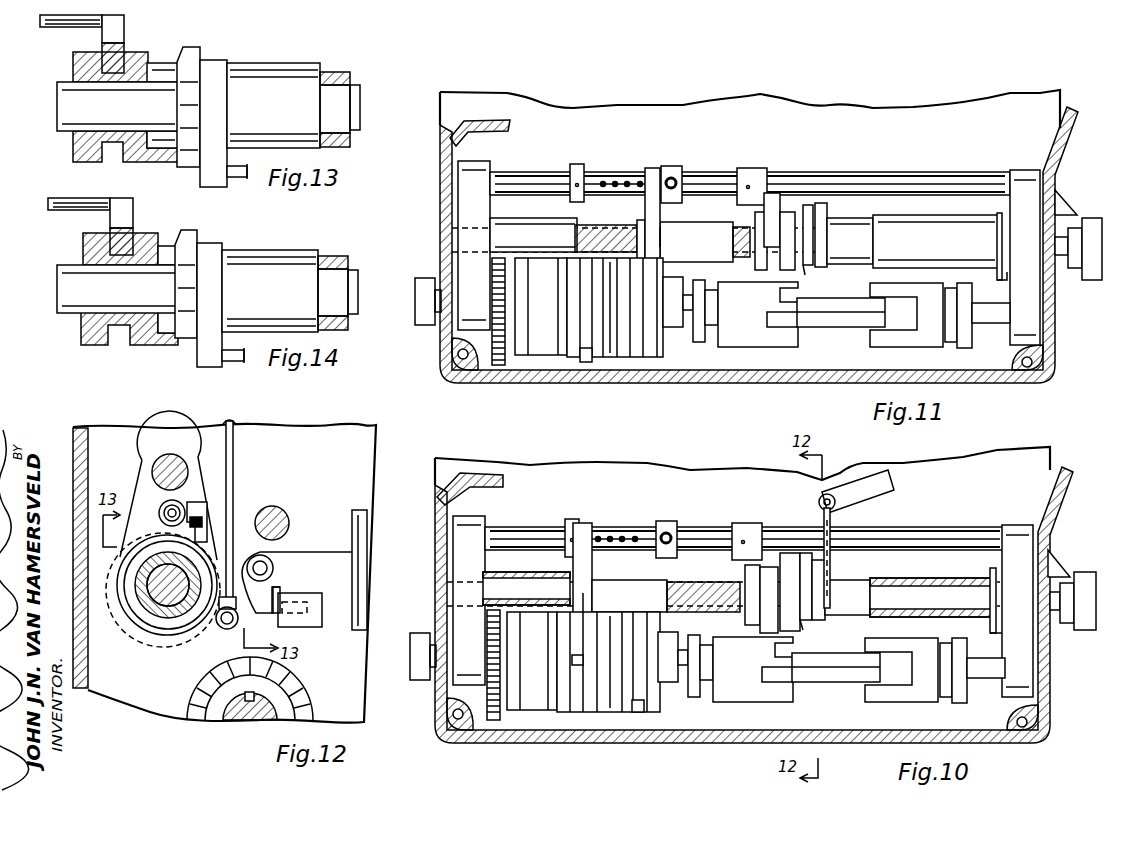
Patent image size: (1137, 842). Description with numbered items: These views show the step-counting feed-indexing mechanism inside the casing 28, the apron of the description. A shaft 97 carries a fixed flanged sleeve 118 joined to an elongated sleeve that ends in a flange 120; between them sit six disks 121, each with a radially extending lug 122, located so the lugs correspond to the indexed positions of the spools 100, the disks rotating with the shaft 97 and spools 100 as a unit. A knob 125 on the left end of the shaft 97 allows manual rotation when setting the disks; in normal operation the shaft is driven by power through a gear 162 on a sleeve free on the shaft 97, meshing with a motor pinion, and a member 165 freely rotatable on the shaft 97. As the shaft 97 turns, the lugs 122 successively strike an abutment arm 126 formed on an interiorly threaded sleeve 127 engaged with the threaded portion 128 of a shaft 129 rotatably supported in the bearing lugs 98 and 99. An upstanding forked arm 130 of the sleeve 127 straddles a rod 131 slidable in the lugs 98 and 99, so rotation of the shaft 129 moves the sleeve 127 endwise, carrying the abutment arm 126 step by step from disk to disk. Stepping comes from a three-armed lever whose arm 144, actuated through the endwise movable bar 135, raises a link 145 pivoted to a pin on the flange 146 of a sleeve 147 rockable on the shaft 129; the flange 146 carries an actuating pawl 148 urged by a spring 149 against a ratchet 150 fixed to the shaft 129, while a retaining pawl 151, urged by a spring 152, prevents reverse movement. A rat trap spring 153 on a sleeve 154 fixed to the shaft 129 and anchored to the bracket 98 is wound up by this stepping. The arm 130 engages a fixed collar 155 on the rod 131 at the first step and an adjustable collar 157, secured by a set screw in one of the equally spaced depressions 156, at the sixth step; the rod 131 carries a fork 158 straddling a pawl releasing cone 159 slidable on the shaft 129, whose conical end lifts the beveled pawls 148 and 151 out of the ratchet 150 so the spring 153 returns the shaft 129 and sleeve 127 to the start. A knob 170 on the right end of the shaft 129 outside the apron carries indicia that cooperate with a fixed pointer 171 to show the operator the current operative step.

In FIG. 11, the housing 28 is at (1045, 105).
In FIG. 10, the housing 28 is at (1040, 465).
In FIG. 12, the shaft 97 is at (240, 720).
In FIG. 11, the shaft 97 is at (825, 312).
In FIG. 10, the shaft 97 is at (835, 684).
In FIG. 11, the bearing lug 98 is at (1025, 312).
In FIG. 10, the bearing lug 98 is at (1020, 645).
In FIG. 11, the bearing lug 99 is at (470, 200).
In FIG. 10, the bearing lug 99 is at (445, 600).
In FIG. 12, the spools 100 is at (300, 695).
In FIG. 11, the spools 100 is at (755, 338).
In FIG. 10, the spools 100 is at (760, 690).
In FIG. 10, the flanged sleeve 118 is at (650, 695).
In FIG. 11, the flange 120 is at (573, 360).
In FIG. 10, the flange 120 is at (565, 713).
In FIG. 11, the disks 121 is at (623, 360).
In FIG. 10, the disks 121 is at (603, 713).
In FIG. 11, the lug 122 is at (585, 363).
In FIG. 10, the lug 122 is at (572, 660).
In FIG. 11, the knob 125 is at (420, 283).
In FIG. 10, the knob 125 is at (412, 641).
In FIG. 11, the abutment arm 126 is at (658, 285).
In FIG. 10, the abutment arm 126 is at (575, 640).
In FIG. 11, the interiorly threaded sleeve 127 is at (713, 241).
In FIG. 10, the interiorly threaded sleeve 127 is at (676, 595).
In FIG. 11, the threaded portion 128 is at (594, 224).
In FIG. 10, the threaded portion 128 is at (702, 582).
In FIG. 13, the shaft 129 is at (117, 106).
In FIG. 14, the shaft 129 is at (117, 289).
In FIG. 12, the shaft 129 is at (160, 605).
In FIG. 11, the shaft 129 is at (726, 235).
In FIG. 10, the shaft 129 is at (525, 582).
In FIG. 11, the upstanding arm 130 is at (652, 172).
In FIG. 10, the upstanding arm 130 is at (592, 567).
In FIG. 12, the rod 131 is at (175, 465).
In FIG. 11, the rod 131 is at (522, 175).
In FIG. 10, the rod 131 is at (745, 519).
In FIG. 12, the endwise movable bar 135 is at (287, 515).
In FIG. 10, the third arm 144 is at (878, 498).
In FIG. 12, the link 145 is at (234, 475).
In FIG. 10, the link 145 is at (832, 520).
In FIG. 13, the flange 146 is at (213, 85).
In FIG. 14, the flange 146 is at (208, 277).
In FIG. 12, the flange 146 is at (200, 615).
In FIG. 11, the flange 146 is at (823, 240).
In FIG. 10, the flange 146 is at (822, 580).
In FIG. 13, the sleeve 147 is at (293, 77).
In FIG. 14, the sleeve 147 is at (285, 260).
In FIG. 11, the sleeve 147 is at (862, 238).
In FIG. 10, the sleeve 147 is at (850, 585).
In FIG. 13, the actuating pawl 148 is at (195, 55).
In FIG. 14, the actuating pawl 148 is at (192, 238).
In FIG. 12, the actuating pawl 148 is at (158, 505).
In FIG. 11, the actuating pawl 148 is at (808, 235).
In FIG. 10, the actuating pawl 148 is at (805, 560).
In FIG. 12, the spring 149 is at (207, 518).
In FIG. 12, the ratchet 150 is at (142, 608).
In FIG. 11, the ratchet 150 is at (806, 268).
In FIG. 10, the ratchet 150 is at (803, 625).
In FIG. 13, the retaining pawl 151 is at (185, 160).
In FIG. 14, the retaining pawl 151 is at (180, 360).
In FIG. 12, the retaining pawl 151 is at (238, 620).
In FIG. 12, the spring 152 is at (280, 595).
In FIG. 11, the rat trap spring 153 is at (996, 240).
In FIG. 10, the rat trap spring 153 is at (990, 590).
In FIG. 11, the sleeve 154 is at (922, 235).
In FIG. 10, the sleeve 154 is at (910, 580).
In FIG. 11, the fixed collar 155 is at (578, 163).
In FIG. 10, the fixed collar 155 is at (581, 519).
In FIG. 11, the depressions 156 is at (615, 180).
In FIG. 10, the depressions 156 is at (616, 517).
In FIG. 11, the adjustable collar 157 is at (675, 165).
In FIG. 10, the adjustable collar 157 is at (684, 522).
In FIG. 13, the fork 158 is at (115, 42).
In FIG. 14, the fork 158 is at (125, 222).
In FIG. 11, the fork 158 is at (772, 208).
In FIG. 10, the fork 158 is at (747, 541).
In FIG. 13, the pawl releasing cone 159 is at (75, 148).
In FIG. 14, the pawl releasing cone 159 is at (150, 343).
In FIG. 11, the pawl releasing cone 159 is at (788, 215).
In FIG. 10, the pawl releasing cone 159 is at (766, 630).
In FIG. 11, the gear 162 is at (497, 368).
In FIG. 10, the gear 162 is at (480, 684).
In FIG. 11, the member 165 is at (545, 358).
In FIG. 10, the member 165 is at (537, 712).
In FIG. 11, the knob 170 is at (1093, 220).
In FIG. 10, the knob 170 is at (1087, 572).
In FIG. 11, the fixed pointer 171 is at (1065, 200).
In FIG. 10, the fixed pointer 171 is at (1060, 560).